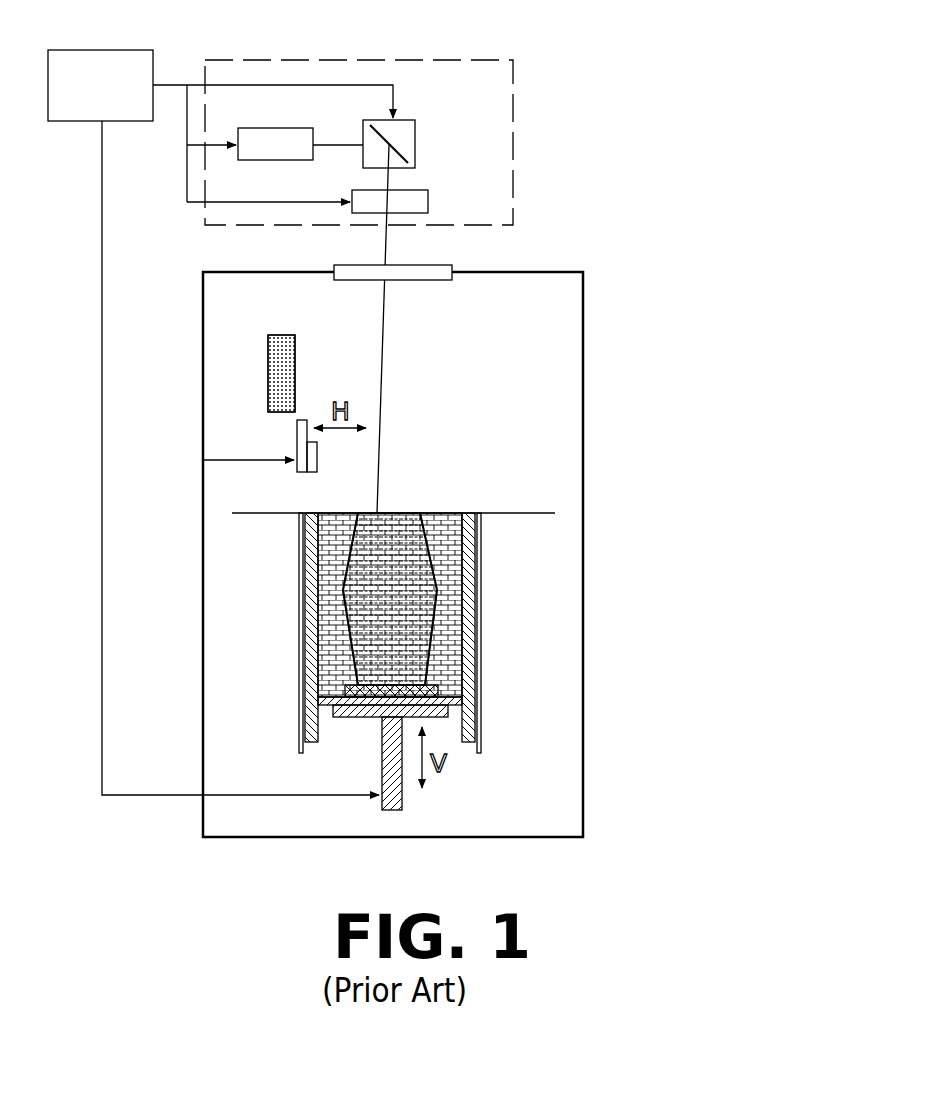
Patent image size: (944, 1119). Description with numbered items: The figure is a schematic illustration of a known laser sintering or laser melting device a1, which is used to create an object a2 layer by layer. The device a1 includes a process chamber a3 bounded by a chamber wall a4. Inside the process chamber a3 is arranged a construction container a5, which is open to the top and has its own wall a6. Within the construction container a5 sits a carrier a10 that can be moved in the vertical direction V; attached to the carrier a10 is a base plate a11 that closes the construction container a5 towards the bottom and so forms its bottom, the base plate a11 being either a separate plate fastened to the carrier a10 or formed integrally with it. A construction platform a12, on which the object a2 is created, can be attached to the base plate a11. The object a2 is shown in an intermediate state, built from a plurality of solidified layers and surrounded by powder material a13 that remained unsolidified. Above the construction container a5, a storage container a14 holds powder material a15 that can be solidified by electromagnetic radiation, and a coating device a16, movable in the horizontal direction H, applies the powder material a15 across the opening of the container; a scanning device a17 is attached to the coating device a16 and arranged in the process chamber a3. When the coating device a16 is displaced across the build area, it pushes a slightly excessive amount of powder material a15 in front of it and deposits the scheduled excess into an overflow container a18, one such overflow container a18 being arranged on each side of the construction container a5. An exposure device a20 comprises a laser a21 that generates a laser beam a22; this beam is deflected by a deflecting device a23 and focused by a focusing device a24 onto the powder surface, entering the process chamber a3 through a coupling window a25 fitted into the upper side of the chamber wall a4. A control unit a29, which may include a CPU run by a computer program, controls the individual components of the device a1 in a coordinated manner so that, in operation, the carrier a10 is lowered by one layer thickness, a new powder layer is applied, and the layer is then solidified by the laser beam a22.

The laser sintering or laser melting device a1 is at (537, 88).
The object a2 is at (405, 560).
The process chamber a3 is at (297, 295).
The chamber wall a4 is at (203, 600).
The construction container a5 is at (485, 679).
The wall a6 is at (468, 628).
The carrier a10 is at (368, 720).
The base plate a11 is at (330, 708).
The construction platform a12 is at (340, 690).
The powder material a13 is at (343, 555).
The storage container a14 is at (282, 340).
The powder material a15 is at (284, 362).
The coating device a16 is at (297, 432).
The scanning device a17 is at (312, 472).
The overflow container a18 is at (301, 622).
The exposure device a20 is at (513, 180).
The laser a21 is at (280, 160).
The laser beam a22 is at (334, 145).
The deflecting device a23 is at (405, 132).
The focusing device a24 is at (413, 202).
The coupling window a25 is at (405, 276).
The control unit a29 is at (100, 85).